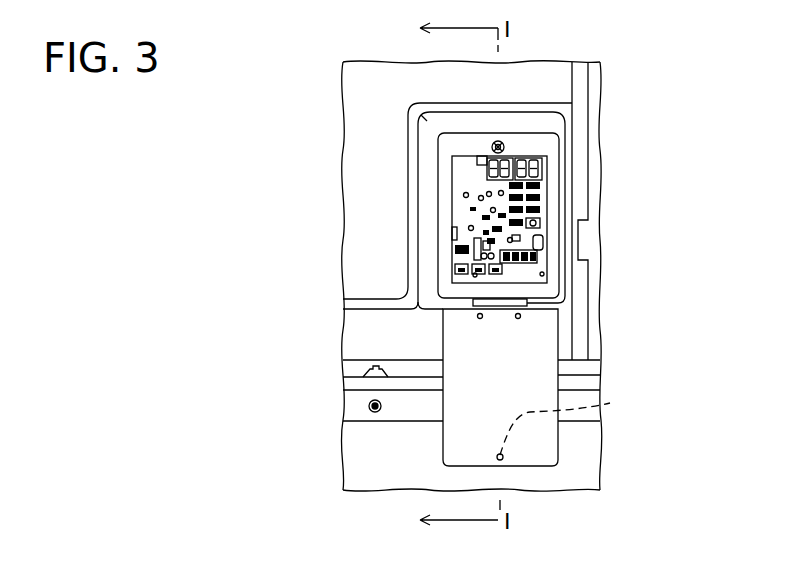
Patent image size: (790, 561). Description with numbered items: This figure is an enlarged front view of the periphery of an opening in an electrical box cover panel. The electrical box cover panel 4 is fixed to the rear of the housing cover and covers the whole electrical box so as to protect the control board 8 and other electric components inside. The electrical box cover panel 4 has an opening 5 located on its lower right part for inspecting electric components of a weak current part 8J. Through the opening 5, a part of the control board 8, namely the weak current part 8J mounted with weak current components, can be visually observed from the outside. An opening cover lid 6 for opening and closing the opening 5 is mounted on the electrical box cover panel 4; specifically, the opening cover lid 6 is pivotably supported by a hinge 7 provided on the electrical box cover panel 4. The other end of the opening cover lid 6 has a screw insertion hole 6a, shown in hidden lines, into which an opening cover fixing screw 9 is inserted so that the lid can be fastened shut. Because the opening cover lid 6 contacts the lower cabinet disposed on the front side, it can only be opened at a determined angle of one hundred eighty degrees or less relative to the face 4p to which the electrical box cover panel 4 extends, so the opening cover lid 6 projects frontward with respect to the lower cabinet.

The electrical box cover panel 4 is at (392, 242).
The face 4p is at (518, 123).
The opening 5 is at (548, 193).
The weak current part 8J is at (528, 236).
The control board 8 is at (522, 240).
The hinge 7 is at (540, 303).
The opening cover lid 6 is at (573, 442).
The screw insertion hole 6a is at (610, 403).
The opening cover fixing screw 9 is at (497, 457).